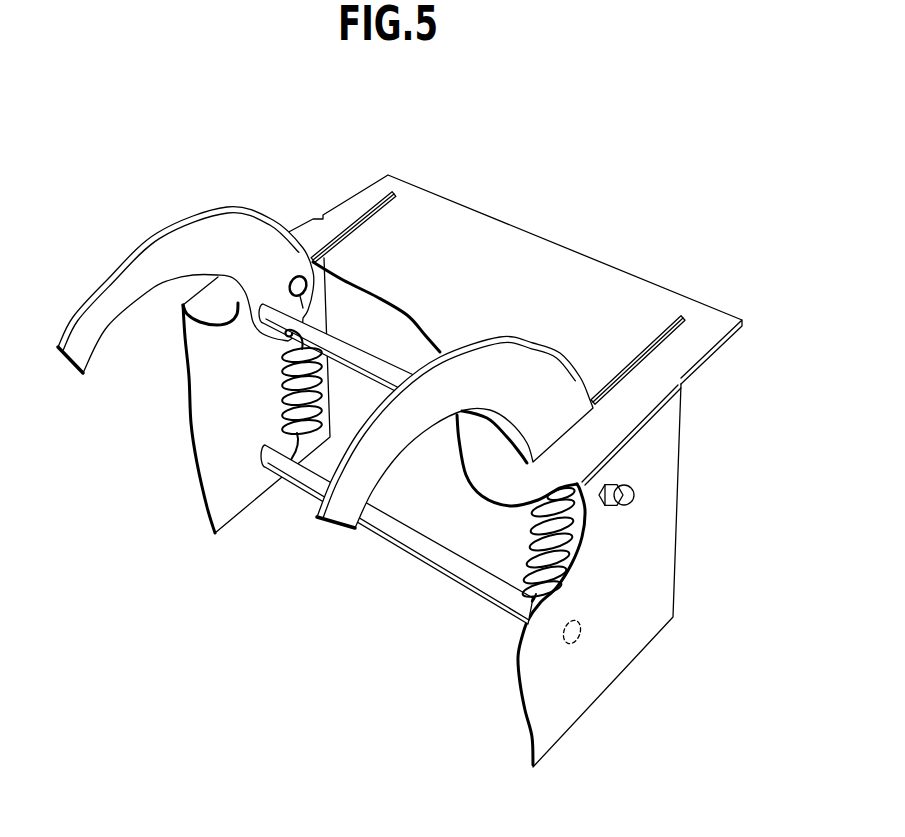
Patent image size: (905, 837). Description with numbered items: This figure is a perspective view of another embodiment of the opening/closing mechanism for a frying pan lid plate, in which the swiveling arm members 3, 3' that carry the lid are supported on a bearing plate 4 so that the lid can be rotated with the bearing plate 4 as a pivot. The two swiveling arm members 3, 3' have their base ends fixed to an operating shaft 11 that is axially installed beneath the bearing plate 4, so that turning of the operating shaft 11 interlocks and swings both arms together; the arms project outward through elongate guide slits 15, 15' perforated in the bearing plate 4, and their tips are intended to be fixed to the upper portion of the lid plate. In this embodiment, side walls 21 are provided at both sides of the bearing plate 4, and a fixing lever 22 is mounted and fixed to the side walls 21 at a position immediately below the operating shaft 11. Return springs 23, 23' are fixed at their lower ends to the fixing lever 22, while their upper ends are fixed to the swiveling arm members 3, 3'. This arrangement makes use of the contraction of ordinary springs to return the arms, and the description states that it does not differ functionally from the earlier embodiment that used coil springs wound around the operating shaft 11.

The swiveling arm member 3 is at (432, 477).
The swiveling arm member 3' is at (186, 290).
The bearing plate 4 is at (507, 237).
The operating shaft 11 is at (283, 336).
The elongate guide slit 15 is at (681, 319).
The elongate guide slit 15' is at (354, 175).
The side wall 21 is at (207, 435).
The fixing lever 22 is at (402, 538).
The return spring 23 is at (497, 586).
The return spring 23' is at (212, 444).